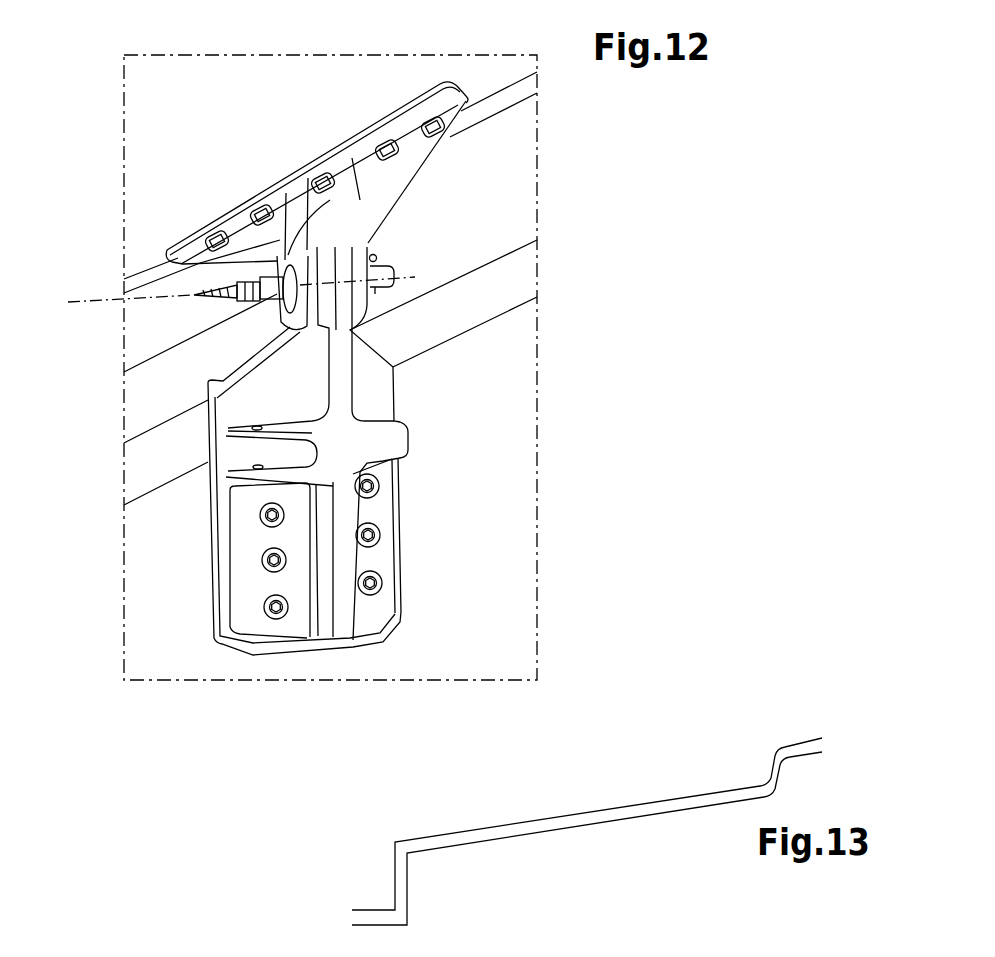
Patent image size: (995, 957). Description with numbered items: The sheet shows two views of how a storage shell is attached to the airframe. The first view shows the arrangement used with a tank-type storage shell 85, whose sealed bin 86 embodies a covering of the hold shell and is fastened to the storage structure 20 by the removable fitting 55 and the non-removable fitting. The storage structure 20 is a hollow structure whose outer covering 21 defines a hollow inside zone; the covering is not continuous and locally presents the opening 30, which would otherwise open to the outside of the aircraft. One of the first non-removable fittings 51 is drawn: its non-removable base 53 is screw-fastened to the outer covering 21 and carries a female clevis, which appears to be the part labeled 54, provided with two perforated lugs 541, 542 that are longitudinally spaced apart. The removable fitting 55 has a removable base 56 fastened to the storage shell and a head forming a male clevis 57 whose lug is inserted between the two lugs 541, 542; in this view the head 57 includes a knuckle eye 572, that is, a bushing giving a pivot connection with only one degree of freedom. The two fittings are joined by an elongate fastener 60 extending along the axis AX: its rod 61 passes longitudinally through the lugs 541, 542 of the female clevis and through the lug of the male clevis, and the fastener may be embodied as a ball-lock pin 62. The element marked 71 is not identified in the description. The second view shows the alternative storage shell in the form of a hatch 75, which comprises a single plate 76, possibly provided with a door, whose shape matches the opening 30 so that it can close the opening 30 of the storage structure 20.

In FIG. 12, the outer covering 21 is at (389, 78).
In FIG. 12, the axis AX is at (91, 297).
In FIG. 12, the first non-removable fittings 51 is at (353, 417).
In FIG. 12, the perforated lug 541 is at (307, 180).
In FIG. 12, the non-removable base 53 is at (433, 161).
In FIG. 12, the web of bracket 54 is at (497, 188).
In FIG. 12, the perforated lug 542 is at (395, 275).
In FIG. 12, the rod 61 is at (452, 280).
In FIG. 12, the male clevis 57 is at (435, 443).
In FIG. 12, the knuckle eye 572 is at (393, 367).
In FIG. 12, the removable base 56 is at (367, 508).
In FIG. 12, the removable fitting 55 is at (231, 639).
In FIG. 12, the elongate fastener 60 is at (152, 327).
In FIG. 12, the ball-lock pin 62 is at (199, 306).
In FIG. 12, the side wall 71 is at (598, 600).
In FIG. 12, the tank 85 is at (598, 600).
In FIG. 12, the sealed bin 86 is at (502, 587).
In FIG. 13, the opening 30 is at (617, 813).
In FIG. 13, the storage structure 20 is at (807, 740).
In FIG. 13, the hatch 75 is at (490, 845).
In FIG. 13, the single plate 76 is at (553, 831).